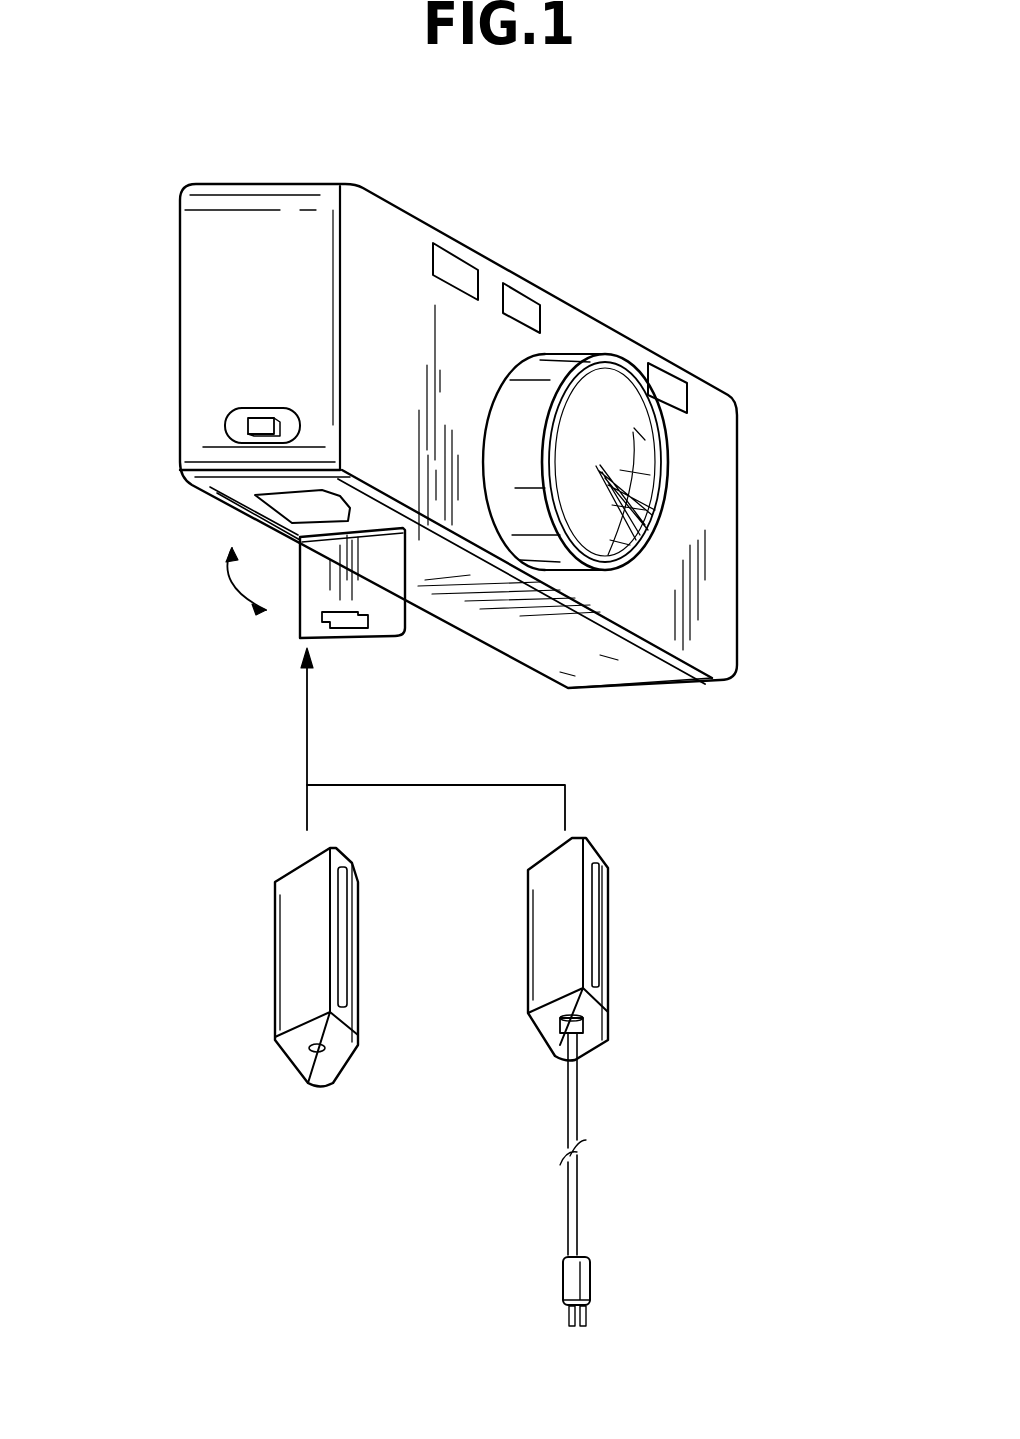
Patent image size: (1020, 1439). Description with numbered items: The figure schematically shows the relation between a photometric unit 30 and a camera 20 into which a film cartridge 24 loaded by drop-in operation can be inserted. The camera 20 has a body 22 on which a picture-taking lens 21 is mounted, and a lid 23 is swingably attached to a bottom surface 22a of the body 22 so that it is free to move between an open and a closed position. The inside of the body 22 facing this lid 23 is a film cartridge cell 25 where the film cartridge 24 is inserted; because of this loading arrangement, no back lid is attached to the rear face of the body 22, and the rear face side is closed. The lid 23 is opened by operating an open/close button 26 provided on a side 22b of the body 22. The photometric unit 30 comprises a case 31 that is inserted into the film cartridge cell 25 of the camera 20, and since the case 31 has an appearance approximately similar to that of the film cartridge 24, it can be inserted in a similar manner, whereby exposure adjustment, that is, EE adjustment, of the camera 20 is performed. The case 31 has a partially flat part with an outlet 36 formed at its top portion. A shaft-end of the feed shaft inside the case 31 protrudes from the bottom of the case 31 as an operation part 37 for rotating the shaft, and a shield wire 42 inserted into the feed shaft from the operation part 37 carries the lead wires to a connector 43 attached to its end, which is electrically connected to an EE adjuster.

The camera 20 is at (442, 507).
The picture-taking lens 21 is at (605, 452).
The body 22 is at (685, 535).
The bottom surface 22a is at (598, 647).
The side 22b is at (250, 327).
The lid 23 is at (406, 625).
The film cartridge 24 is at (293, 944).
The film cartridge cell 25 is at (282, 495).
The open/close button 26 is at (261, 410).
The photometric unit 30 is at (604, 1082).
The case 31 is at (548, 916).
The outlet 36 is at (603, 891).
The operation part 37 is at (557, 1030).
The shield wire 42 is at (578, 1090).
The connector 43 is at (575, 1281).